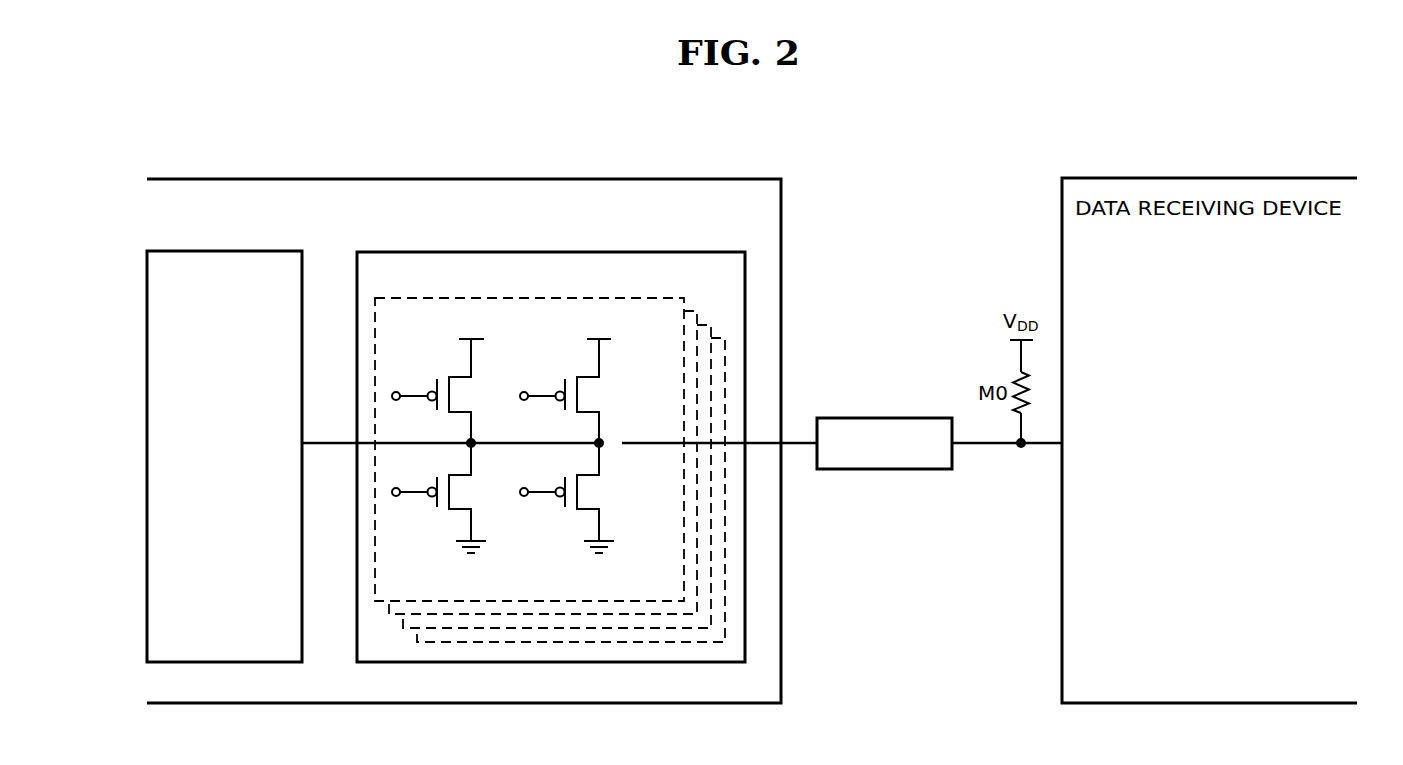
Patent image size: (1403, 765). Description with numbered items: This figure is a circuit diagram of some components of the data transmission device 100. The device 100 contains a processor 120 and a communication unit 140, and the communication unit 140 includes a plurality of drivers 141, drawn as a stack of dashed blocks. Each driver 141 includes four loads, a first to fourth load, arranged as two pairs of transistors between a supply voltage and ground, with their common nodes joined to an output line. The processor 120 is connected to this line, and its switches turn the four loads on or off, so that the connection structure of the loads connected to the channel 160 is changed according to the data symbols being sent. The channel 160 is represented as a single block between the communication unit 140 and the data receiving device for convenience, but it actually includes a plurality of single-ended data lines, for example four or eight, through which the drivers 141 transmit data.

The data transmission device 100 is at (708, 179).
The processor 120 is at (230, 251).
The communication unit 140 is at (675, 251).
The driver 141 is at (613, 296).
The channel 160 is at (878, 417).